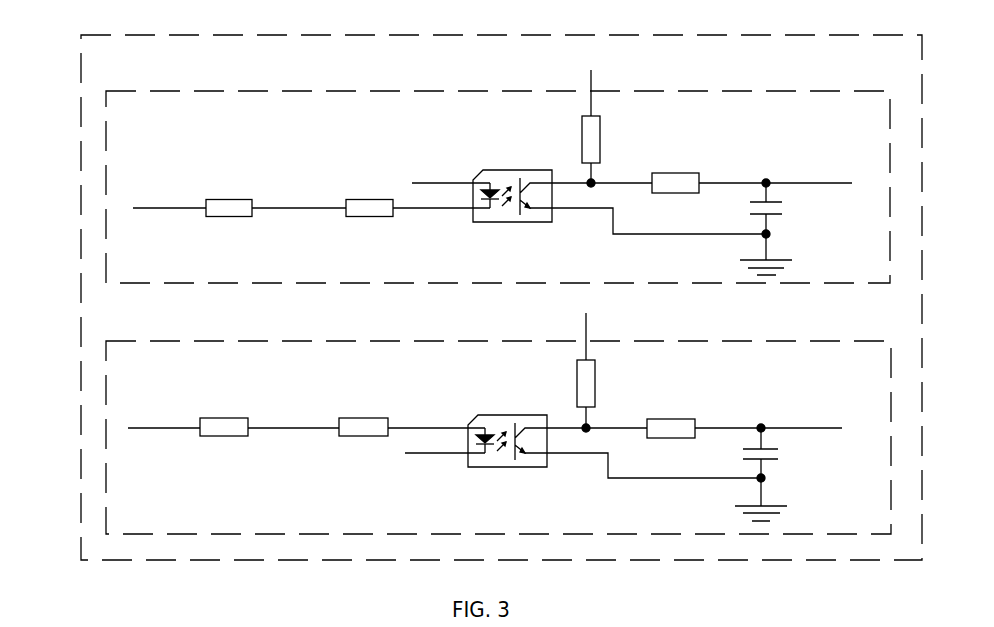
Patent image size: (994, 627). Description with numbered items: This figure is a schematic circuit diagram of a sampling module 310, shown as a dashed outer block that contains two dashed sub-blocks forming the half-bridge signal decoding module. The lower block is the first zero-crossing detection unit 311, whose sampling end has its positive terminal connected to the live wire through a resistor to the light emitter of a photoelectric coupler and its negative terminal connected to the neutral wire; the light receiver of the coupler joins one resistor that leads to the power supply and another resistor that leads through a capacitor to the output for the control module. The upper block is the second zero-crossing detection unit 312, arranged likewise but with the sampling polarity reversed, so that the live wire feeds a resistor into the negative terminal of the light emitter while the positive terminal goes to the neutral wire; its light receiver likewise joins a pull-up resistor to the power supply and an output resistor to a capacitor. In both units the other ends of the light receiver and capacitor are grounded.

The zero-crossing detection circuit 310 is at (106, 317).
The first zero-crossing detection unit 311 is at (255, 377).
The second zero-crossing detection unit 312 is at (297, 123).